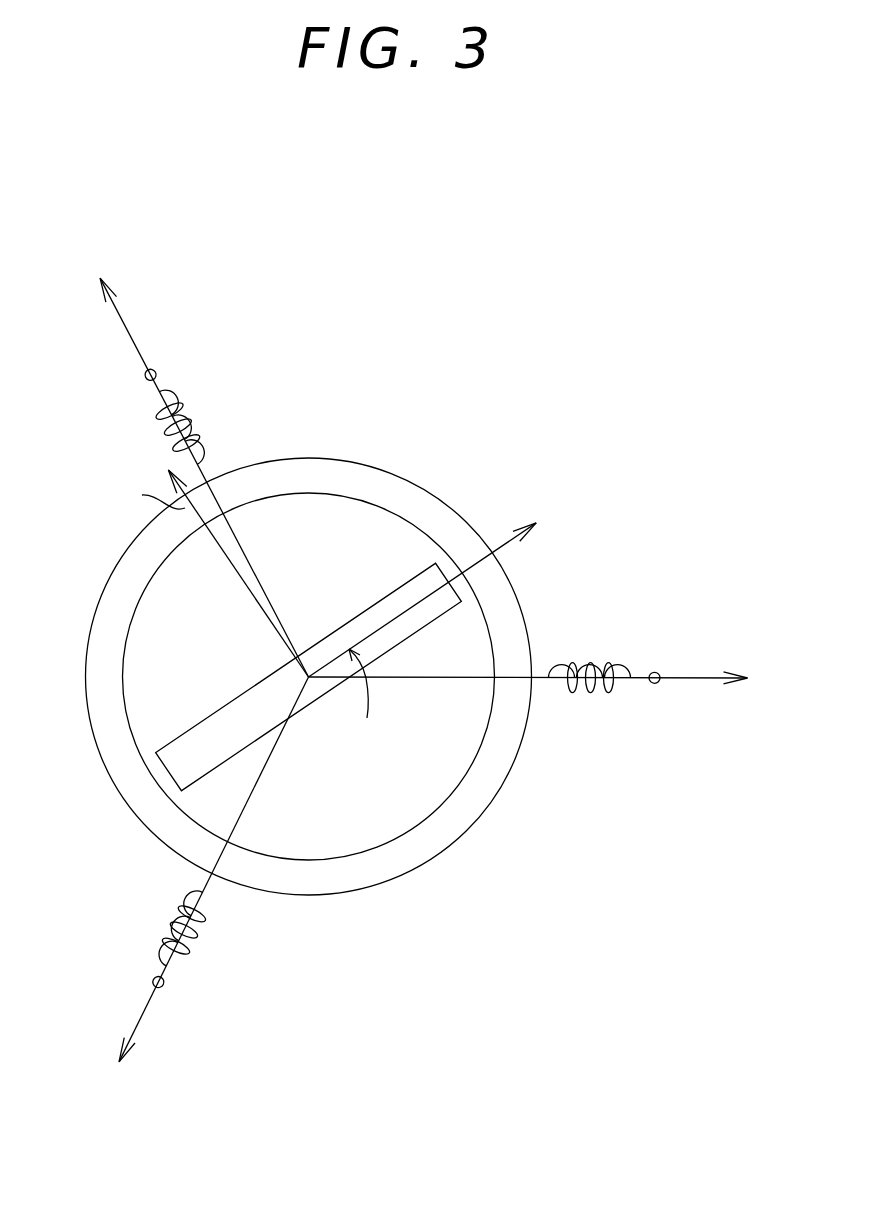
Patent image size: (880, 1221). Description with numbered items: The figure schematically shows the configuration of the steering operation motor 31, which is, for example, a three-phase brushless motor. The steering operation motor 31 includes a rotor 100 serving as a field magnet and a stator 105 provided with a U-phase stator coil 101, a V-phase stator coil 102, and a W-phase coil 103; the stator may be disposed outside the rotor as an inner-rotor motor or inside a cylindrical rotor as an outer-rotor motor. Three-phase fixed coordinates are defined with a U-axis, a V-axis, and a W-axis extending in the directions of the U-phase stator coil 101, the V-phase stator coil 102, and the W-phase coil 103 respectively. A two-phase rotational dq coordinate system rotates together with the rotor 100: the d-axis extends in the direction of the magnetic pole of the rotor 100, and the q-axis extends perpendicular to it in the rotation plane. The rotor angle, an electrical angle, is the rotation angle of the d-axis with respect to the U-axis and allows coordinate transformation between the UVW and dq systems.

The steering operation motor 31 is at (453, 360).
The rotor 100 is at (220, 727).
The U-phase stator coil 101 is at (582, 657).
The V-phase stator coil 102 is at (192, 407).
The W-phase coil 103 is at (175, 923).
The stator 105 is at (485, 785).